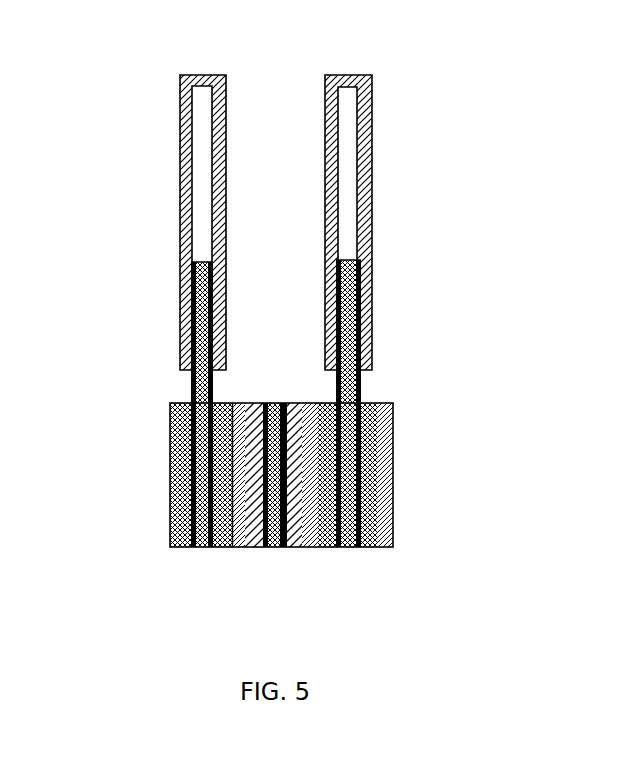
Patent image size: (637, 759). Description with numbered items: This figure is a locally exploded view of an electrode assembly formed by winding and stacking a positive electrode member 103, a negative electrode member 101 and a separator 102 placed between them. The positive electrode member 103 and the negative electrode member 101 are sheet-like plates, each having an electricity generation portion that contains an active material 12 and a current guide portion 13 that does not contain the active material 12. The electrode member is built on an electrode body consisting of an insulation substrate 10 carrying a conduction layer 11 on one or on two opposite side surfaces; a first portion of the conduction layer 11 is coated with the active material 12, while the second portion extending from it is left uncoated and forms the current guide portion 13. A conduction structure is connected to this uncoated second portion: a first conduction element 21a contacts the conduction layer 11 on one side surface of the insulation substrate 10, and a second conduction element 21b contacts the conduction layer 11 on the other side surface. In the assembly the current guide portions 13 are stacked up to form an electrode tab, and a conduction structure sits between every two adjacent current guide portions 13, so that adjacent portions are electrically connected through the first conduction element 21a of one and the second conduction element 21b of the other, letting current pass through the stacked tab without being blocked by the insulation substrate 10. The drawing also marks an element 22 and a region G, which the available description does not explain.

The top wall of shell 22 is at (212, 76).
The first conduction element 21a is at (190, 133).
The second conduction element 21b is at (215, 128).
The gap / cavity G is at (200, 205).
The conduction layer 11 is at (190, 313).
The insulation substrate 10 is at (210, 315).
The current guide portion 13 is at (190, 380).
The active material 12 is at (170, 417).
The negative electrode member 101 is at (300, 550).
The separator 102 is at (223, 548).
The positive electrode member 103 is at (178, 548).